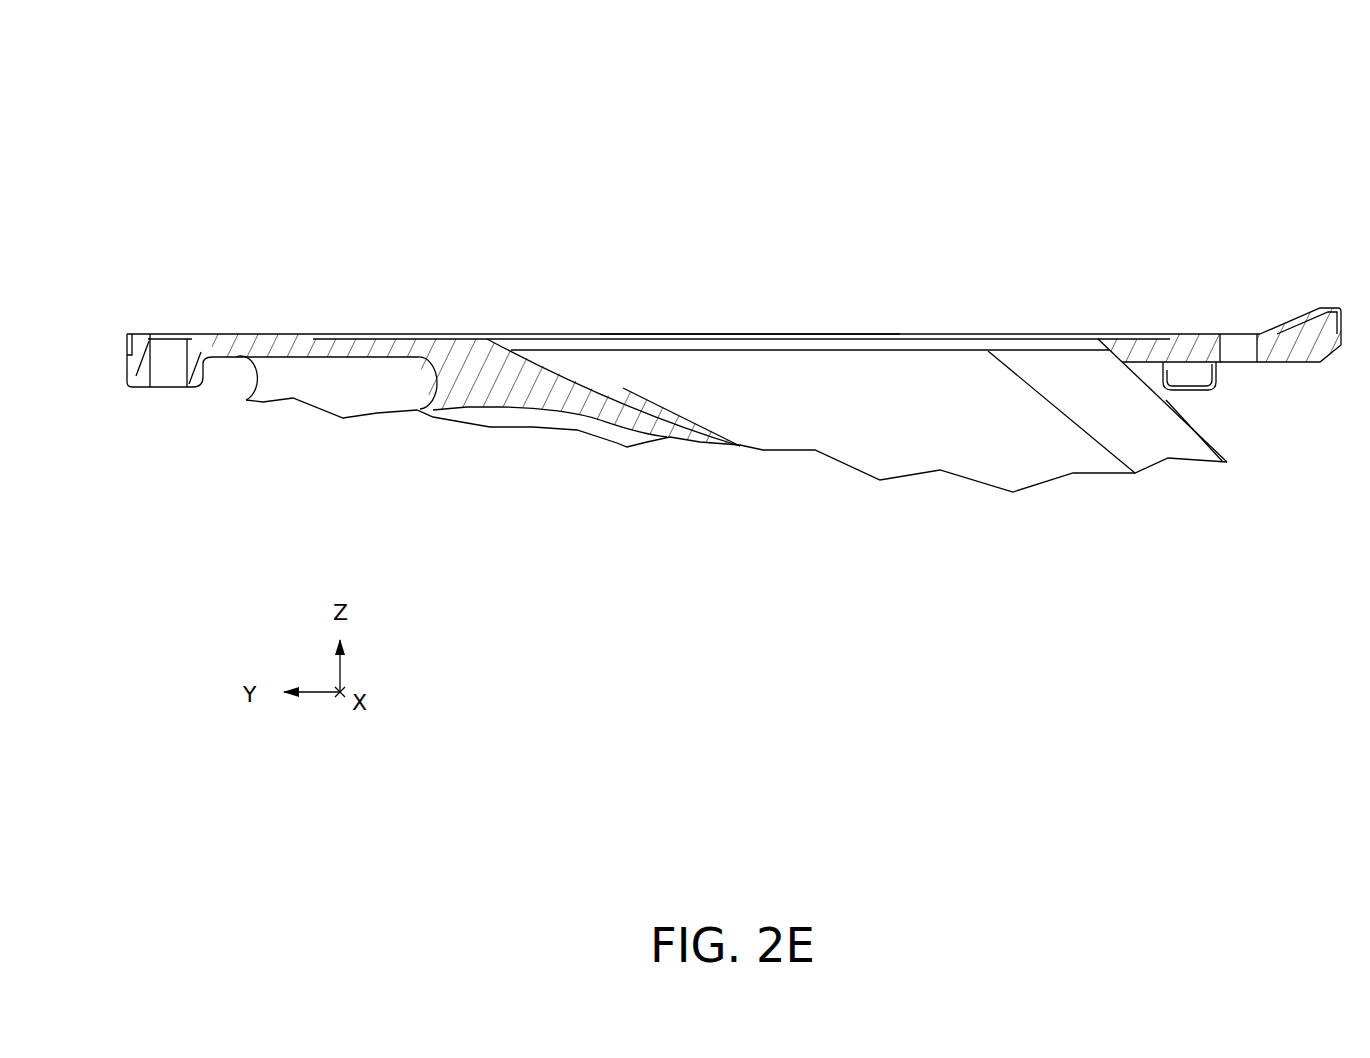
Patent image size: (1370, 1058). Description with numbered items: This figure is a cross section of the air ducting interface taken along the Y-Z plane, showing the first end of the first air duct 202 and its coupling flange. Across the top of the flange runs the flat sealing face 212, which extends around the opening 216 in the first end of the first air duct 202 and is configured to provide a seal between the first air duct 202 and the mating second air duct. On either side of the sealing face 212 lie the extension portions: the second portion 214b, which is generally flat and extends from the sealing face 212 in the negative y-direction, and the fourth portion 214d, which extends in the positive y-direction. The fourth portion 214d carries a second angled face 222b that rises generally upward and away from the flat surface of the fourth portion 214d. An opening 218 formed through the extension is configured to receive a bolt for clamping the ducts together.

The first air duct 202 is at (170, 145).
The sealing face 212 is at (420, 337).
The second portion 214b is at (270, 337).
The fourth portion 214d is at (1197, 335).
The opening 216 is at (808, 292).
The opening 218 is at (170, 328).
The second angled face 222b is at (1321, 312).